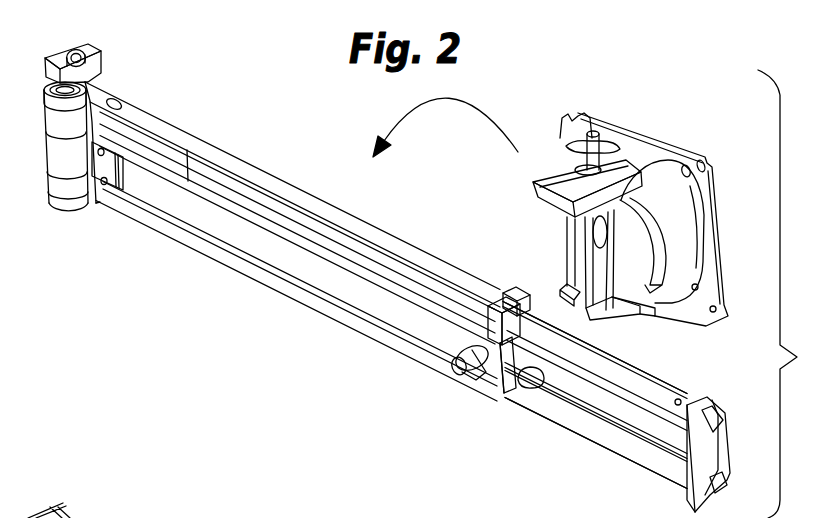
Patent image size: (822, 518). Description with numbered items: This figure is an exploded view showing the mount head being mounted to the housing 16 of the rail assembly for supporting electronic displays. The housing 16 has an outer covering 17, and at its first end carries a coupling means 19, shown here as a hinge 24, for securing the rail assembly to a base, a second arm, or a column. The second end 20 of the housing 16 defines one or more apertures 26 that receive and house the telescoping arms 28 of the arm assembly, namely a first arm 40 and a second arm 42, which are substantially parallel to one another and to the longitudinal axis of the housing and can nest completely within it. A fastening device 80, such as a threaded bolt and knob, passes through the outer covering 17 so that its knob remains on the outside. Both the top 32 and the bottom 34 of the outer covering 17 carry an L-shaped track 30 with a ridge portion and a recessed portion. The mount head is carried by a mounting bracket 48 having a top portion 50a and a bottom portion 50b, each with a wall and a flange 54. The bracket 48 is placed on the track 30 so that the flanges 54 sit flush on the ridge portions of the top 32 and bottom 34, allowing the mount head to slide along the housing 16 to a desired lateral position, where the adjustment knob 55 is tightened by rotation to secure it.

The housing 16 is at (147, 197).
The outer covering 17 is at (298, 267).
The coupling means 19 is at (52, 57).
The second end 20 is at (503, 388).
The hinge 24 is at (56, 205).
The apertures 26 is at (190, 152).
The telescoping arms 28 is at (640, 382).
The track 30 is at (170, 118).
The top 32 is at (230, 181).
The bottom 34 is at (217, 262).
The first arm 40 is at (590, 357).
The second arm 42 is at (577, 423).
The mounting bracket 48 is at (620, 245).
The top portion 50a is at (622, 163).
The bottom portion 50b is at (638, 306).
The flange 54 is at (545, 202).
The adjustment knob 55 is at (590, 110).
The fastening device 80 is at (458, 368).